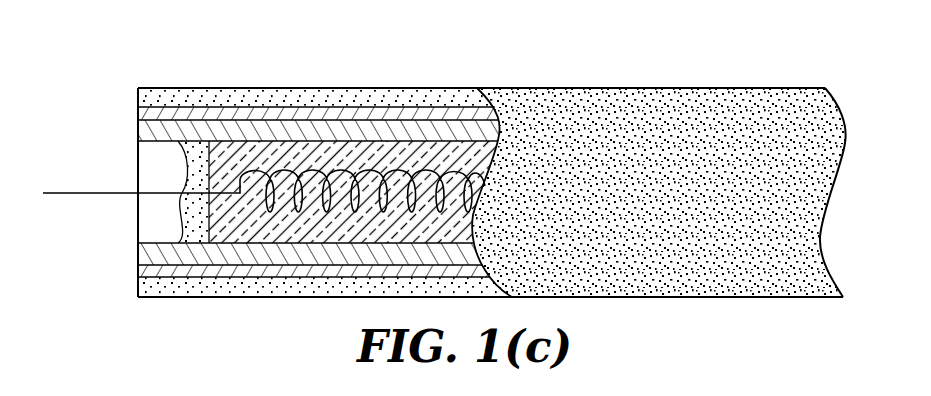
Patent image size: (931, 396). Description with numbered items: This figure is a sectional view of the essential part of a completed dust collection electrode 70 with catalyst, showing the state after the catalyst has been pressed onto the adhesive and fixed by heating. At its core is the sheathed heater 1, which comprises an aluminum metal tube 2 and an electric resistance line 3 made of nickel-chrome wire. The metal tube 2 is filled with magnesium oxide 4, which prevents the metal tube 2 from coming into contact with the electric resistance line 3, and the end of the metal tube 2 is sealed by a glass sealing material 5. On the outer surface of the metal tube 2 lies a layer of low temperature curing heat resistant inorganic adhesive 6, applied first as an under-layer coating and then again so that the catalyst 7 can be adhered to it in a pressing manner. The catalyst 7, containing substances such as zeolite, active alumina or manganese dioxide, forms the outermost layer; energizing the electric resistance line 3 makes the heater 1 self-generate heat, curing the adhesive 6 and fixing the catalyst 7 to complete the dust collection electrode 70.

The sheathed heater 1 is at (281, 167).
The metal tube 2 is at (422, 127).
The electric resistance line 3 is at (100, 192).
The magnesium oxide 4 is at (295, 143).
The glass sealing material 5 is at (198, 142).
The heat resistant inorganic adhesive 6 is at (457, 115).
The catalyst 7 is at (248, 100).
The dust collection electrode 70 is at (531, 78).